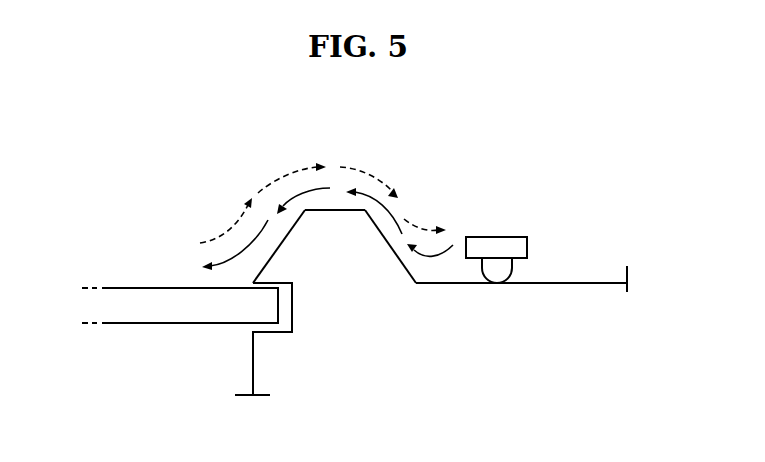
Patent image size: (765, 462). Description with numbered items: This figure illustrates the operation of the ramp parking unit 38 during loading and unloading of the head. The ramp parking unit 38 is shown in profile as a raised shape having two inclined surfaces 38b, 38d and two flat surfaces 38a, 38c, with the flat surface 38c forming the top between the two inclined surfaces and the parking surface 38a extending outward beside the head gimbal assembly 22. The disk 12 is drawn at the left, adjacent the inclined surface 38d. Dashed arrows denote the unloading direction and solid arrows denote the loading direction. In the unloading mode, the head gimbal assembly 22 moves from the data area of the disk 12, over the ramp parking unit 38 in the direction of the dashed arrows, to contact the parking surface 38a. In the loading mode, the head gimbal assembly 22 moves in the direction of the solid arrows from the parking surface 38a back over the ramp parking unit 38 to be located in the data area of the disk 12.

The disk 12 is at (130, 288).
The head gimbal assembly 22 is at (488, 237).
The ramp parking unit 38 is at (413, 257).
The parking surface 38a is at (555, 282).
The inclined surface 38b is at (392, 243).
The flat surface 38c is at (335, 210).
The inclined surface 38d is at (280, 248).